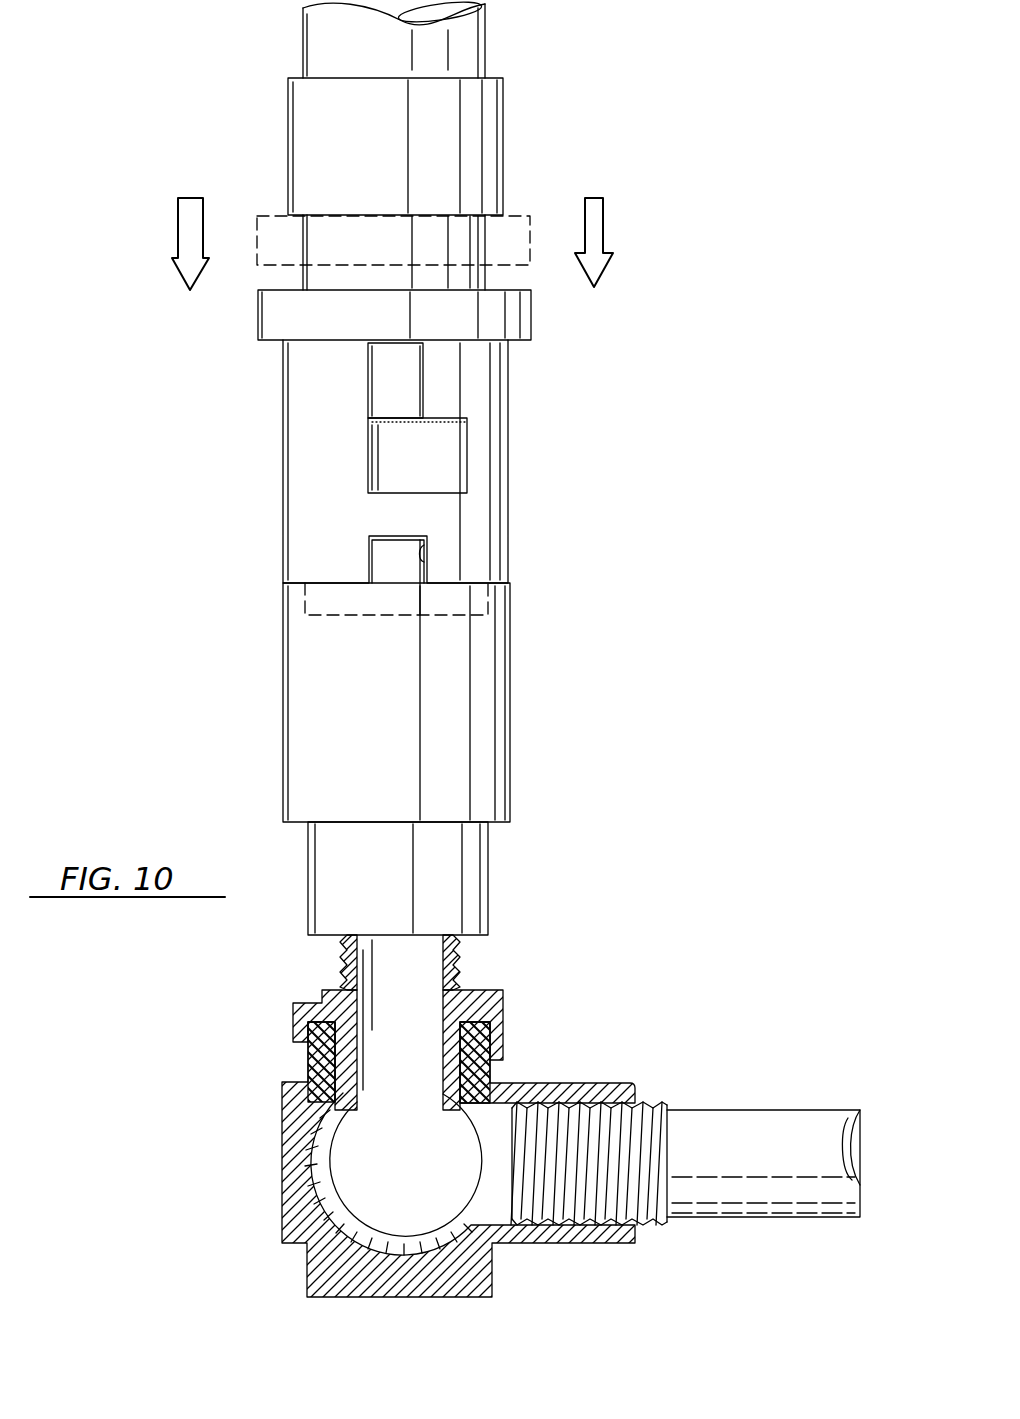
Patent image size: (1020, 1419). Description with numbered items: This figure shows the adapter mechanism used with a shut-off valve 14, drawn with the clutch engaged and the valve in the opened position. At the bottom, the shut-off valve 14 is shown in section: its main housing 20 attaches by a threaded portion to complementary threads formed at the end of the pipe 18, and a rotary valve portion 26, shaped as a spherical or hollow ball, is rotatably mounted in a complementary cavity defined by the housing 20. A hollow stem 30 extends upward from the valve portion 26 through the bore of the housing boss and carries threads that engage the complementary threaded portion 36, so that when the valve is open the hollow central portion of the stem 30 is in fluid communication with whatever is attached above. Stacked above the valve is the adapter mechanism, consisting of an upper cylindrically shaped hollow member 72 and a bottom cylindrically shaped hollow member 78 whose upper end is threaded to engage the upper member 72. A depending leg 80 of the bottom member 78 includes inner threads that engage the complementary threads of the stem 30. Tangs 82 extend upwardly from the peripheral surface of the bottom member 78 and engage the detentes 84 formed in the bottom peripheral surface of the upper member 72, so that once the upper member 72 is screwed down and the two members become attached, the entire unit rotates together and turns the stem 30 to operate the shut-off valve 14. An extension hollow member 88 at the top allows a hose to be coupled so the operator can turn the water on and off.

The shut-off valve 14 is at (540, 1080).
The pipe 18 is at (733, 1110).
The main housing 20 is at (608, 1092).
The rotary valve portion 26 is at (315, 1157).
The hollow stem 30 is at (470, 993).
The complementary threaded portion 36 is at (460, 960).
The upper cylindrically shaped hollow member 72 is at (508, 425).
The bottom cylindrically shaped hollow member 78 is at (500, 727).
The depending leg 80 is at (488, 885).
The tangs 82 is at (380, 556).
The detentes 84 is at (427, 565).
The extension hollow member 88 is at (487, 45).